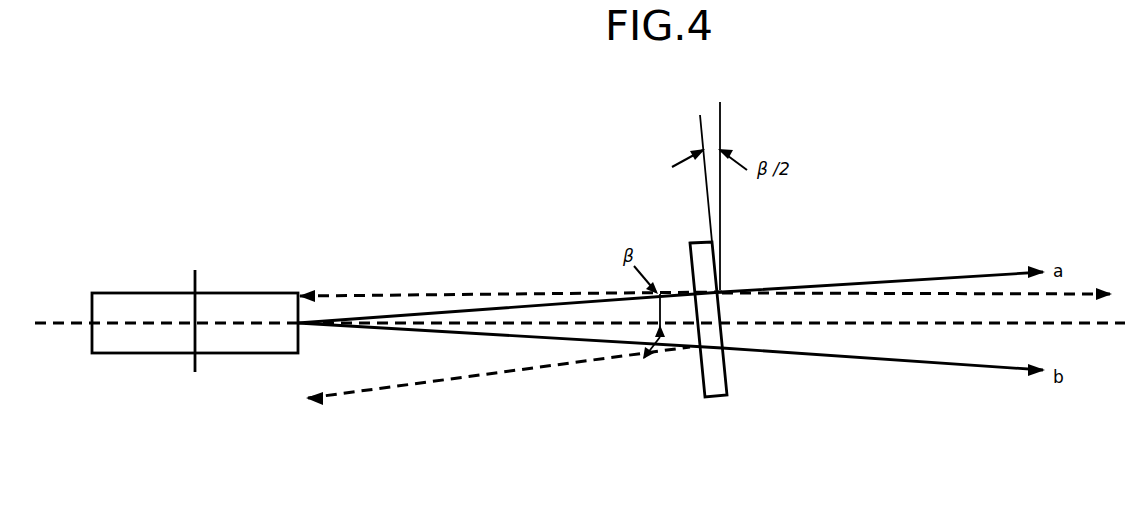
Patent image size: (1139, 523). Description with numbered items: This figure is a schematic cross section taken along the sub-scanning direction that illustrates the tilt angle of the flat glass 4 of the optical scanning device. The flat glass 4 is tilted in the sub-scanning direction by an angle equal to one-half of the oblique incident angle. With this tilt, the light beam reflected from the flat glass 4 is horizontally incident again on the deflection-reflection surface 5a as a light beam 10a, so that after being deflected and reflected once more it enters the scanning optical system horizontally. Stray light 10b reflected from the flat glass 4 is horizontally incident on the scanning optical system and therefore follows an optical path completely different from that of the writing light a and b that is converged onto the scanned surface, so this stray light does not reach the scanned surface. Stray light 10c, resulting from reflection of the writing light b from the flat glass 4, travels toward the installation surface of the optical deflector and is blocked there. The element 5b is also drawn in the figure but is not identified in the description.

The light source 5b is at (140, 293).
The deflection-reflection surface 5a is at (303, 340).
The light beam 10a is at (437, 296).
The stray light 10b is at (1078, 292).
The stray light 10c is at (478, 378).
The flat glass 4 is at (716, 398).